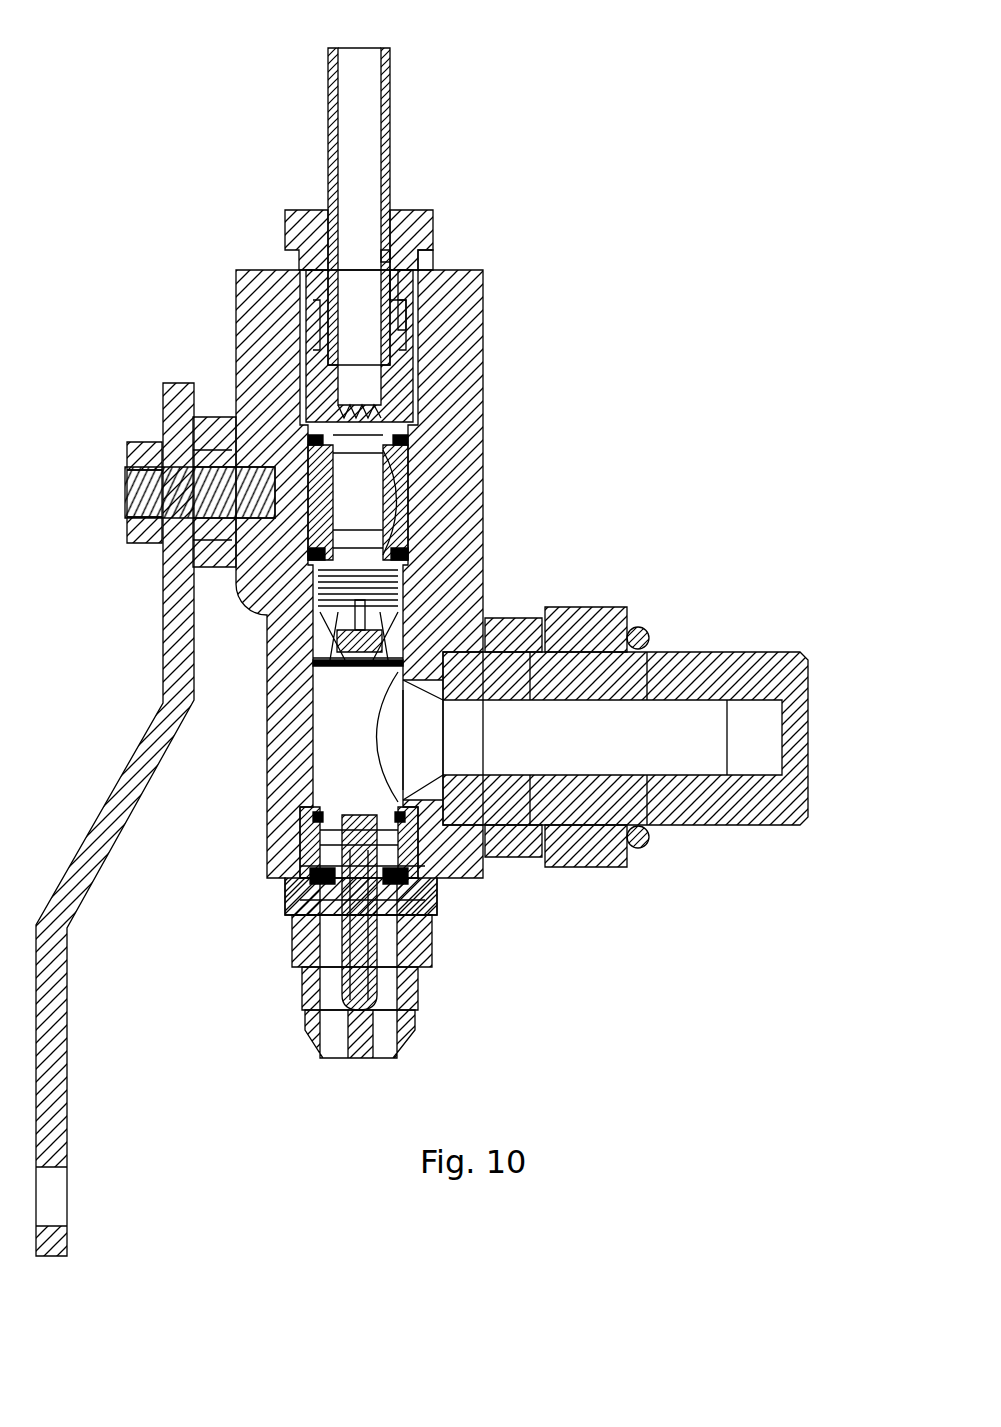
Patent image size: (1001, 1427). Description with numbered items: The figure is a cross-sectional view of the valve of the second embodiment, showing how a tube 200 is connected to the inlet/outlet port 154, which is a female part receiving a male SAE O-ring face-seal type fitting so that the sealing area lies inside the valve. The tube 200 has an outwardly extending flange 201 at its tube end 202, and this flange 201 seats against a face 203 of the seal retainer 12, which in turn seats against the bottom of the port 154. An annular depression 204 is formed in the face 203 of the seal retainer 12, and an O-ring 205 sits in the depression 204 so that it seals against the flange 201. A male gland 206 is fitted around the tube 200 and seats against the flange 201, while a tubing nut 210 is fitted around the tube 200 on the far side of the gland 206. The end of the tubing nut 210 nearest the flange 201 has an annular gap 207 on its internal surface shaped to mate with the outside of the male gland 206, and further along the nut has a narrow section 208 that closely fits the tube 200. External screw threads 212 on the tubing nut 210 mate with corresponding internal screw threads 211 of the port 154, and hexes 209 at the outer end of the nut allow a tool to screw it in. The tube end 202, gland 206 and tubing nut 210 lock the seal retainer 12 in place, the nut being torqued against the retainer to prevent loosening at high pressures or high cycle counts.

The inlet/outlet port 154 is at (452, 253).
The tube 200 is at (390, 97).
The flange 201 is at (385, 362).
The tube end 202 is at (388, 366).
The face 203 is at (380, 363).
The annular depression 204 is at (380, 362).
The O-ring 205 is at (413, 382).
The male gland 206 is at (397, 313).
The annular gap 207 is at (393, 295).
The narrow section 208 is at (385, 258).
The hexes 209 is at (433, 230).
The tubing nut 210 is at (398, 293).
The screw threads 211 is at (300, 305).
The screw threads 212 is at (405, 343).
The seal retainer 12 is at (403, 397).